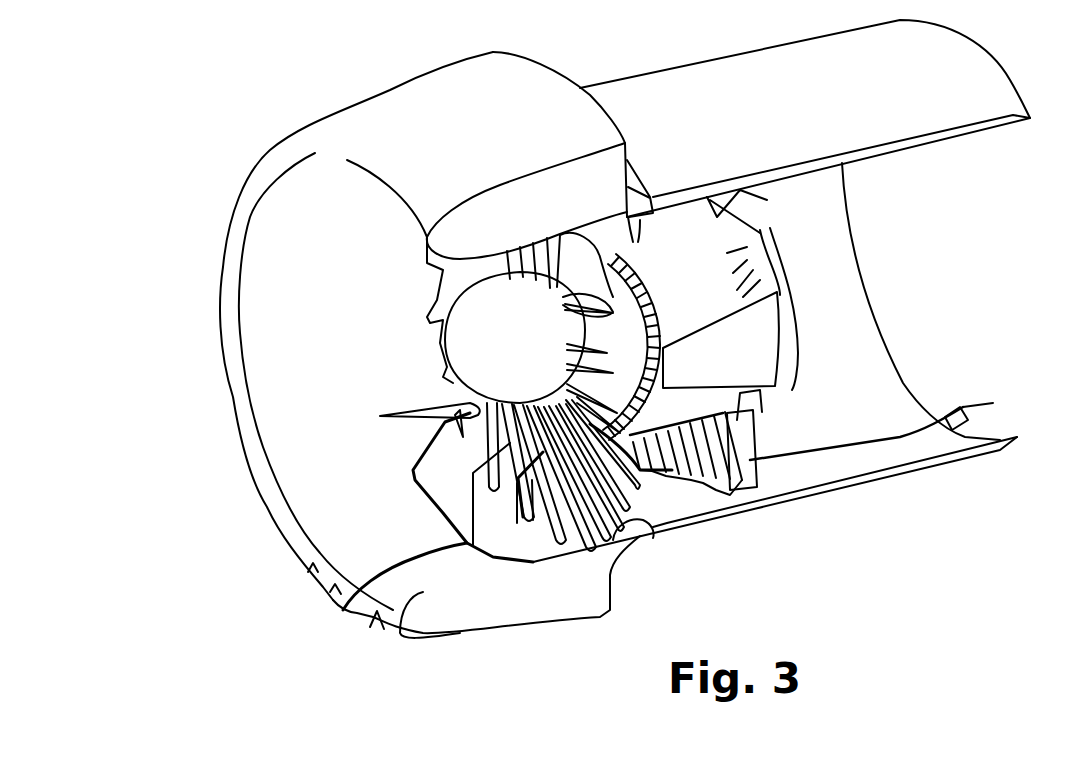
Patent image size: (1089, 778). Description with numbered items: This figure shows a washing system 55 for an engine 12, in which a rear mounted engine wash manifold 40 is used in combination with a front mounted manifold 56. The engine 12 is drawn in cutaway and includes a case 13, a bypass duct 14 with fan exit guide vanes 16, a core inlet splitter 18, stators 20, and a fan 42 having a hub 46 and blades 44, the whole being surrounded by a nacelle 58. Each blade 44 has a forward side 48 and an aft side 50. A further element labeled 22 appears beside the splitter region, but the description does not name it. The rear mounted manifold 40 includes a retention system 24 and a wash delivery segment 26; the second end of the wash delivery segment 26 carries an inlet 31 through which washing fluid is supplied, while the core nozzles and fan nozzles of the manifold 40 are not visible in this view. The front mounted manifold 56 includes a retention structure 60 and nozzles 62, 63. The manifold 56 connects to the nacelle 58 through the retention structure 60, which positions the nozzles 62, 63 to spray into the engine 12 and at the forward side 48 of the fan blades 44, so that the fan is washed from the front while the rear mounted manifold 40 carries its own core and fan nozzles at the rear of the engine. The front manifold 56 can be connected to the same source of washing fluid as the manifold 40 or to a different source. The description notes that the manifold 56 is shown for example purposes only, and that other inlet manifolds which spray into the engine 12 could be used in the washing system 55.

The engine 12 is at (240, 520).
The case 13 is at (893, 480).
The bypass duct 14 is at (670, 525).
The fan exit guide vanes 16 is at (743, 480).
The core inlet splitter 18 is at (653, 420).
The stators 20 is at (668, 370).
The fan 22 is at (525, 402).
The retention system 24 is at (960, 400).
The wash delivery segment 26 is at (847, 450).
The inlet 31 is at (993, 403).
The rear mounted engine wash manifold 40 is at (918, 425).
The fan 42 is at (358, 365).
The blades 44 is at (568, 545).
The hub 46 is at (485, 315).
The forward side 48 is at (616, 565).
The aft side 50 is at (636, 530).
The washing system 55 is at (320, 613).
The front mounted manifold 56 is at (358, 568).
The nacelle 58 is at (420, 592).
The retention structure 60 is at (350, 612).
The nozzle 62 is at (381, 416).
The nozzle 63 is at (470, 518).